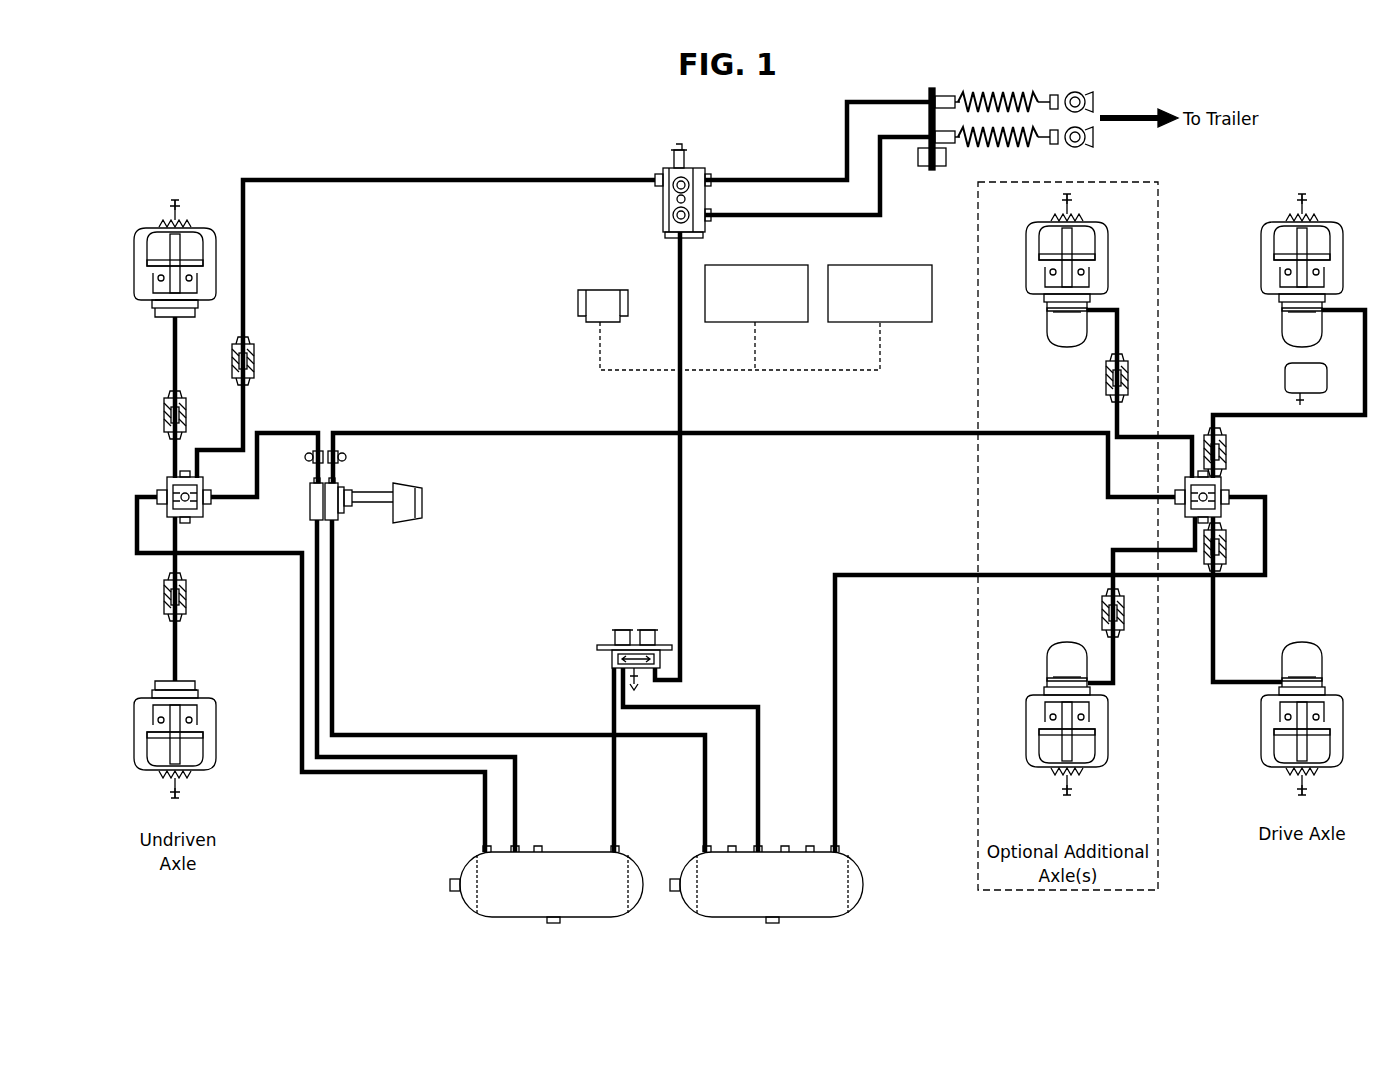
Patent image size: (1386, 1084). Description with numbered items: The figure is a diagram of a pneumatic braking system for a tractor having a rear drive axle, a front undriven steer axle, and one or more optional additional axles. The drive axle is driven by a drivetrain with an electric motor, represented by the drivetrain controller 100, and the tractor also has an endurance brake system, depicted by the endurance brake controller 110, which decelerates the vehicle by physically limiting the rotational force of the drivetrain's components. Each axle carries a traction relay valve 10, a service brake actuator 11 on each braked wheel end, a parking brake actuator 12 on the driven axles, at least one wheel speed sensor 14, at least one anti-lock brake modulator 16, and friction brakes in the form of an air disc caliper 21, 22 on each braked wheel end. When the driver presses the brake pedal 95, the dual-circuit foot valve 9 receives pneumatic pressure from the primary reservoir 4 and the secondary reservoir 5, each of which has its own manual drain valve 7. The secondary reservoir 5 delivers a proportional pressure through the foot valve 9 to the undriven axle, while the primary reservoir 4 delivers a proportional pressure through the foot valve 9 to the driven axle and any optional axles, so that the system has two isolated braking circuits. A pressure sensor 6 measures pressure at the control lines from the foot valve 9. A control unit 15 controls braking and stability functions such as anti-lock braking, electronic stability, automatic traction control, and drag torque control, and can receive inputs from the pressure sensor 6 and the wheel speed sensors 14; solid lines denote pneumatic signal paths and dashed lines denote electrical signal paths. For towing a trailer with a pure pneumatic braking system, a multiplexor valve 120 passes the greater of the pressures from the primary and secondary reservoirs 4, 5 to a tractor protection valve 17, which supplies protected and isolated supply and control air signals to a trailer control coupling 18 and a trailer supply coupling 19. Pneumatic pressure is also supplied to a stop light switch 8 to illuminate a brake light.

The primary reservoir 4 is at (850, 866).
The secondary reservoir 5 is at (480, 866).
The pressure sensor 6 is at (312, 452).
The manual drain valve 7 is at (552, 924).
The stop light switch 8 is at (672, 160).
The dual-circuit foot valve 9 is at (345, 505).
The traction relay valve 10 is at (194, 520).
The service brake actuator 11 is at (170, 318).
The parking brake actuator 12 is at (1050, 344).
The wheel speed sensor 14 is at (180, 203).
The control unit 15 is at (594, 290).
The anti-lock brake modulator 16 is at (256, 362).
The tractor protection valve 17 is at (663, 205).
The trailer control coupling 18 is at (1094, 98).
The trailer supply coupling 19 is at (1094, 141).
The air disc caliper 21 is at (150, 268).
The air disc caliper 22 is at (147, 715).
The brake pedal 95 is at (423, 500).
The drivetrain controller 100 is at (770, 265).
The endurance brake controller 110 is at (880, 265).
The multiplexor valve 120 is at (600, 647).